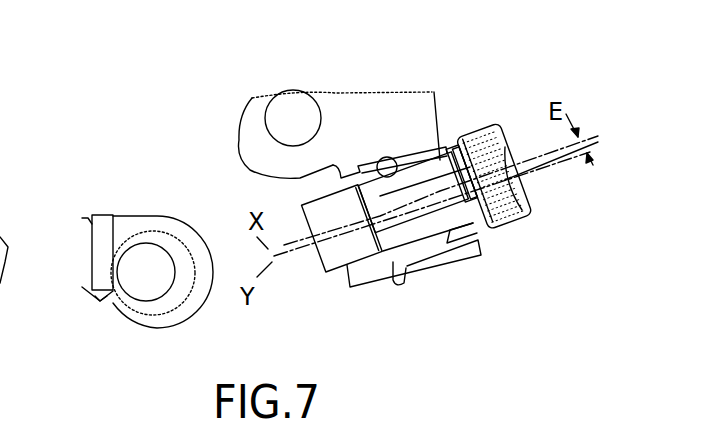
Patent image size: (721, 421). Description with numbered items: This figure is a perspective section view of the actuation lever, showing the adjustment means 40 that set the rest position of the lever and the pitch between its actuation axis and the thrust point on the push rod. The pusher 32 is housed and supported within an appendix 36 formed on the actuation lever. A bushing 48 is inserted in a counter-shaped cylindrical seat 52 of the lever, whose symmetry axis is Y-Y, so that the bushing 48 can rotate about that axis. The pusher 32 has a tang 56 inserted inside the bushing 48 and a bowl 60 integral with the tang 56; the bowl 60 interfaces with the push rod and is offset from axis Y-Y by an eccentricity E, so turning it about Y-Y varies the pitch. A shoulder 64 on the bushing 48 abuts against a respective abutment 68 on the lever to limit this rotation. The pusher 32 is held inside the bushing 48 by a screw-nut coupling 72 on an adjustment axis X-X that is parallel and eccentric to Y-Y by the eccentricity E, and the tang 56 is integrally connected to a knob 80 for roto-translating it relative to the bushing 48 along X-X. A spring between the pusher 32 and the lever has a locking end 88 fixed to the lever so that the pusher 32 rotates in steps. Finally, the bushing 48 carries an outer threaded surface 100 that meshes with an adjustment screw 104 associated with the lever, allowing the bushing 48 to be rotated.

The pusher 32 is at (510, 78).
The appendix 36 is at (358, 133).
The adjustment means 40 is at (292, 167).
The bushing 48 is at (356, 182).
The cylindrical seat 52 is at (148, 282).
The tang 56 is at (413, 230).
The bowl 60 is at (330, 259).
The shoulder 64 is at (380, 263).
The abutment 68 is at (397, 268).
The screw-nut coupling 72 is at (442, 160).
The knob 80 is at (530, 207).
The locking end 88 is at (474, 250).
The outer threaded surface 100 is at (405, 162).
The adjustment screw 104 is at (355, 165).